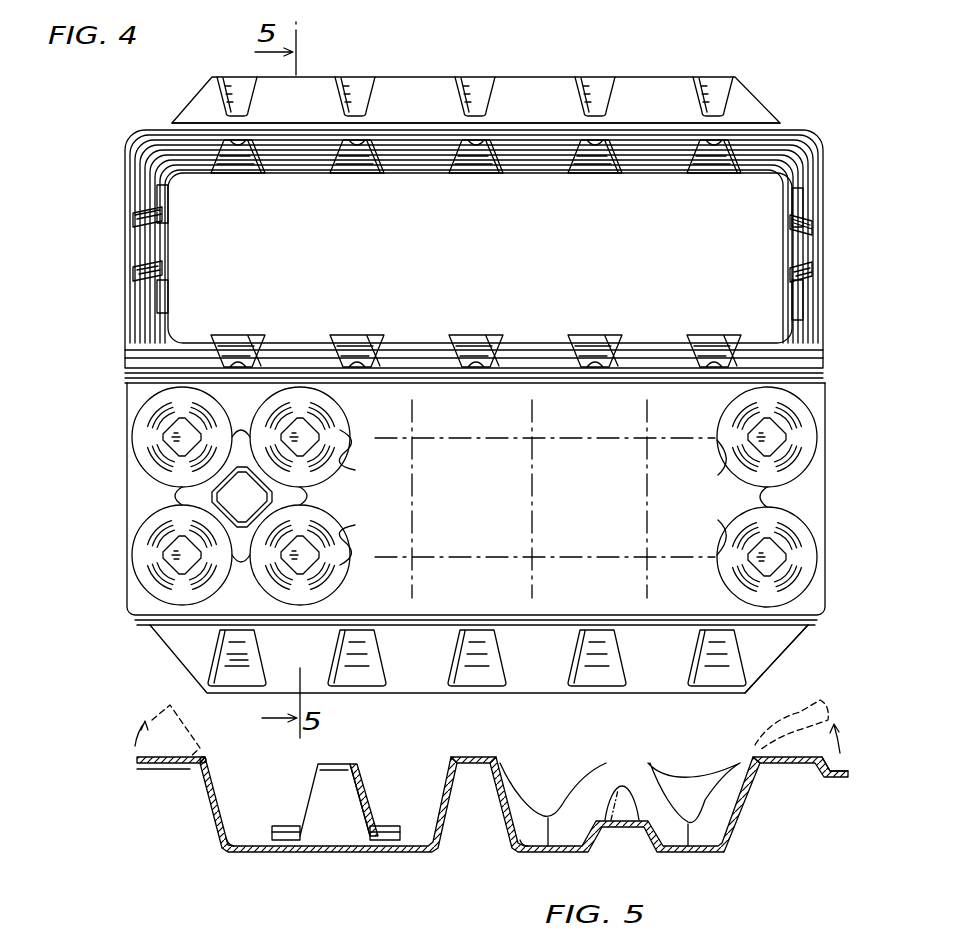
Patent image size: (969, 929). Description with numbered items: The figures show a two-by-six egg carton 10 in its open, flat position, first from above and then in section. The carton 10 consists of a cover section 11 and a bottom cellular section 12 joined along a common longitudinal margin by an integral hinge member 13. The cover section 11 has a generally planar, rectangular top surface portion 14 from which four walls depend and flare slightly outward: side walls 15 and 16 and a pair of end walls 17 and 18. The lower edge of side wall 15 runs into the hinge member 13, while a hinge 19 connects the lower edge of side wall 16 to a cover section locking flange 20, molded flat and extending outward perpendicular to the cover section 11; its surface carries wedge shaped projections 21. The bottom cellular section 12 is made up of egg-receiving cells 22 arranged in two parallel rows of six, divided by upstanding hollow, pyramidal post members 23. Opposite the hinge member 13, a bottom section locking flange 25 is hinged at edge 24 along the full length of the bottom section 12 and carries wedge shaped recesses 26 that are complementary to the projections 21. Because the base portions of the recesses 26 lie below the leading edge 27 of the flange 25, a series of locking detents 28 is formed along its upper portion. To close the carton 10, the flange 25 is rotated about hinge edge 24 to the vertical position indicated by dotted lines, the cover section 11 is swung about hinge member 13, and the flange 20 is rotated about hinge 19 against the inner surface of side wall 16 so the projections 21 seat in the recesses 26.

In FIG. 4, the egg carton 10 is at (842, 229).
In FIG. 4, the cover section 11 is at (522, 250).
In FIG. 5, the cover section 11 is at (407, 866).
In FIG. 4, the bottom cellular section 12 is at (518, 519).
In FIG. 5, the bottom cellular section 12 is at (677, 856).
In FIG. 4, the hinge member 13 is at (826, 378).
In FIG. 5, the hinge member 13 is at (467, 758).
In FIG. 5, the top surface portion 14 is at (287, 853).
In FIG. 5, the side wall 15 is at (448, 814).
In FIG. 5, the side wall 16 is at (213, 812).
In FIG. 5, the end wall 17 is at (418, 809).
In FIG. 5, the end wall 18 is at (582, 832).
In FIG. 4, the hinge 19 is at (172, 124).
In FIG. 5, the hinge 19 is at (204, 756).
In FIG. 4, the cover section locking flange 20 is at (419, 77).
In FIG. 5, the cover section locking flange 20 is at (150, 774).
In FIG. 4, the wedge shaped projections 21 is at (237, 85).
In FIG. 4, the egg-receiving cells 22 is at (162, 440).
In FIG. 4, the post members 23 is at (226, 498).
In FIG. 4, the hinge edge 24 is at (166, 626).
In FIG. 5, the hinge edge 24 is at (755, 747).
In FIG. 4, the bottom section locking flange 25 is at (786, 666).
In FIG. 5, the bottom section locking flange 25 is at (838, 780).
In FIG. 4, the wedge shaped recesses 26 is at (480, 680).
In FIG. 4, the leading edge 27 is at (549, 694).
In FIG. 4, the locking detents 28 is at (353, 686).